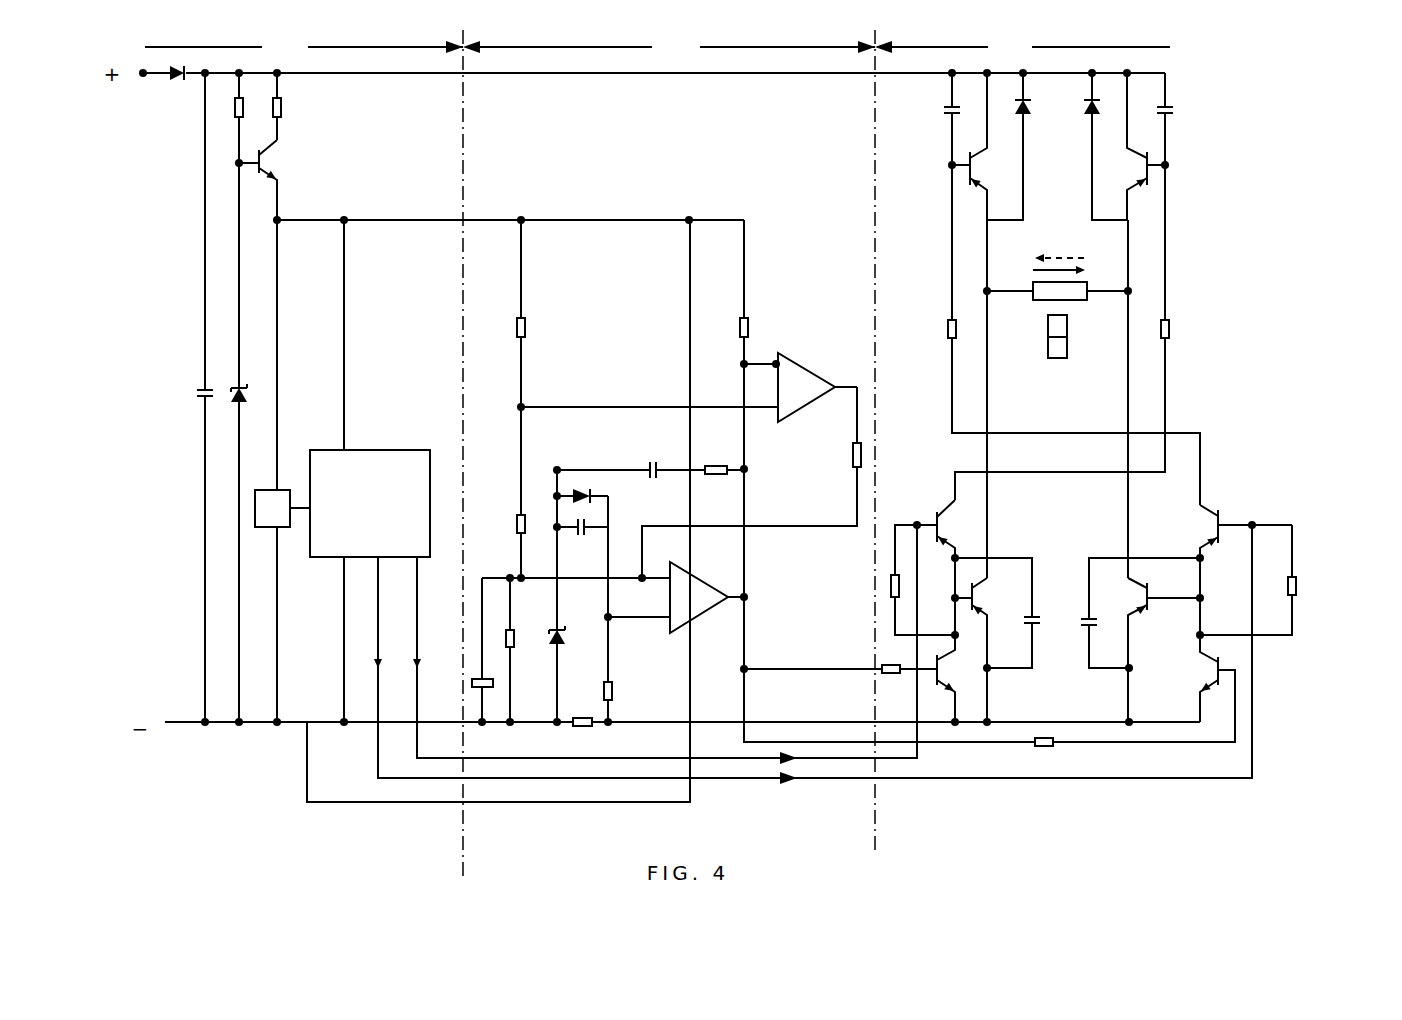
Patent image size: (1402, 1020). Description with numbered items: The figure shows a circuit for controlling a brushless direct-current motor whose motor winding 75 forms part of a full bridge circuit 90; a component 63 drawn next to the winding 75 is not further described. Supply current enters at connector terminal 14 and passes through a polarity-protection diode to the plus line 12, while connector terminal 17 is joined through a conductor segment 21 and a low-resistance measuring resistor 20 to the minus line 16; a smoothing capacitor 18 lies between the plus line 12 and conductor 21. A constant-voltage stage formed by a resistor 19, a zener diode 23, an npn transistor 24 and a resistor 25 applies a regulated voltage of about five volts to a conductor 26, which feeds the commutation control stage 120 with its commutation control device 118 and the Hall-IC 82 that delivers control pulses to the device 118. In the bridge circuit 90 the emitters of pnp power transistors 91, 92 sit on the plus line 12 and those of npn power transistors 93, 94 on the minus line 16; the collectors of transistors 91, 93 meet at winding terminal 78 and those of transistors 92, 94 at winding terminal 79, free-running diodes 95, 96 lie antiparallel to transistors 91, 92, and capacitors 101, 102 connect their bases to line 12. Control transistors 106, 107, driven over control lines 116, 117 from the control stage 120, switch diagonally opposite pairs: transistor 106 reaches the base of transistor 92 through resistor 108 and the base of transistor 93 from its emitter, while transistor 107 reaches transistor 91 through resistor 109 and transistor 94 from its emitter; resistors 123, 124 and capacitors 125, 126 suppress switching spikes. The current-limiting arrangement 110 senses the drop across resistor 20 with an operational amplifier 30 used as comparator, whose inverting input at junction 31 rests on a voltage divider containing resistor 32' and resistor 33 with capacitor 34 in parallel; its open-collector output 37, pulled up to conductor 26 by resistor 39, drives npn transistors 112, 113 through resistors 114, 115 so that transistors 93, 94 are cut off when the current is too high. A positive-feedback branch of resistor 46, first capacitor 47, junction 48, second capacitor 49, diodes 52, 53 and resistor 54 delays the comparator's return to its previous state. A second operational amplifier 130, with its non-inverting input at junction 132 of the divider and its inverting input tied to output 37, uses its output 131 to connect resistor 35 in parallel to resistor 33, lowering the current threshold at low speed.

The plus line 12 is at (700, 75).
The connector terminal 14 is at (143, 80).
The minus line 16 is at (1012, 722).
The connector terminal 17 is at (165, 722).
The smoothing capacitor 18 is at (208, 390).
The resistor 19 is at (239, 110).
The measuring resistor 20 is at (583, 727).
The conductor segment 21 is at (290, 724).
The zener diode 23 is at (239, 412).
The npn transistor 24 is at (262, 163).
The resistor 25 is at (282, 107).
The conductor 26 is at (403, 220).
The operational amplifier 30 is at (710, 590).
The junction 31 is at (518, 577).
The resistor 32' is at (503, 492).
The resistor 33 is at (514, 646).
The capacitor 34 is at (472, 683).
The resistor 35 is at (853, 455).
The output 37 is at (748, 597).
The resistor 39 is at (748, 326).
The resistor 46 is at (714, 466).
The first capacitor 47 is at (653, 462).
The junction 48 is at (557, 496).
The second capacitor 49 is at (580, 535).
The diode 52 is at (593, 497).
The diode 53 is at (563, 632).
The resistor 54 is at (613, 692).
The position sensor 63 is at (1068, 346).
The motor winding 75 is at (1080, 301).
The winding terminal 78 is at (990, 288).
The winding terminal 79 is at (1126, 288).
The Hall-IC 82 is at (268, 490).
The full bridge circuit 90 is at (1022, 48).
The pnp power transistor 91 is at (974, 168).
The pnp power transistor 92 is at (1143, 168).
The npn power transistor 93 is at (978, 600).
The npn power transistor 94 is at (1143, 598).
The free-running diode 95 is at (1028, 118).
The free-running diode 96 is at (1086, 118).
The capacitor 101 is at (946, 110).
The capacitor 102 is at (1175, 112).
The npn transistor 106 is at (935, 512).
The npn transistor 107 is at (1222, 512).
The resistor 108 is at (1171, 329).
The resistor 109 is at (946, 328).
The current-limiting arrangement 110 is at (669, 48).
The npn transistor 112 is at (962, 640).
The npn transistor 113 is at (1212, 672).
The resistor 114 is at (875, 665).
The resistor 115 is at (1045, 748).
The control line 116 is at (753, 762).
The control line 117 is at (818, 782).
The commutation control device 118 is at (352, 521).
The commutation control stage 120 is at (304, 48).
The resistor 123 is at (890, 585).
The resistor 124 is at (1298, 588).
The capacitor 125 is at (1035, 615).
The capacitor 126 is at (1080, 640).
The operational amplifier 130 is at (800, 373).
The output 131 is at (857, 387).
The junction 132 is at (525, 407).